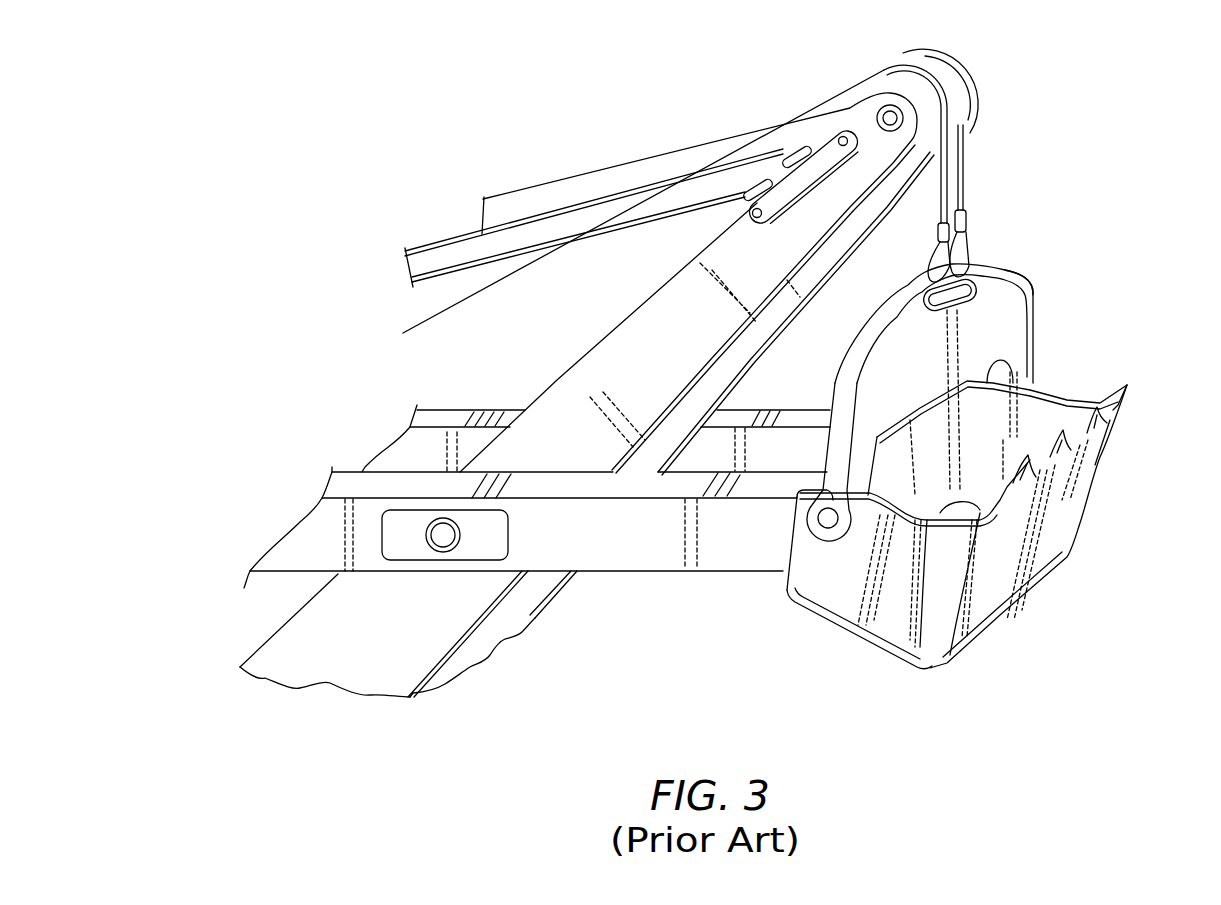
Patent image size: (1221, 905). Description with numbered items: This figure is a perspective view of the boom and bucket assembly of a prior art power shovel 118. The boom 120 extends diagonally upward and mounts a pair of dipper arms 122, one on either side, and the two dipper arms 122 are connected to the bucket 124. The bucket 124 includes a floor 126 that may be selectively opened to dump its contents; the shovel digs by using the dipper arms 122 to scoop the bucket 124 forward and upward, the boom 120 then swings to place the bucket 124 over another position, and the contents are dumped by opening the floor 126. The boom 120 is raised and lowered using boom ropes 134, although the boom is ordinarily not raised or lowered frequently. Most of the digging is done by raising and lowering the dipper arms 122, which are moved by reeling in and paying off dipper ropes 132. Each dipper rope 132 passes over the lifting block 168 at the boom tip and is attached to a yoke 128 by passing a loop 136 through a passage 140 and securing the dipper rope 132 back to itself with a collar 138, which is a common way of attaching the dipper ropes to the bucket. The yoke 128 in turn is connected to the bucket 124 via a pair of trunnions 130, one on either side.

The power shovel 118 is at (1103, 101).
The boom 120 is at (677, 310).
The dipper arms 122 is at (637, 548).
The bucket 124 is at (910, 603).
The floor 126 is at (903, 660).
The yoke 128 is at (1003, 320).
The trunnions 130 is at (823, 537).
The dipper ropes 132 is at (949, 187).
The boom ropes 134 is at (457, 262).
The loop 136 is at (980, 268).
The collar 138 is at (968, 220).
The passage 140 is at (1031, 283).
The lifting block 168 is at (960, 72).